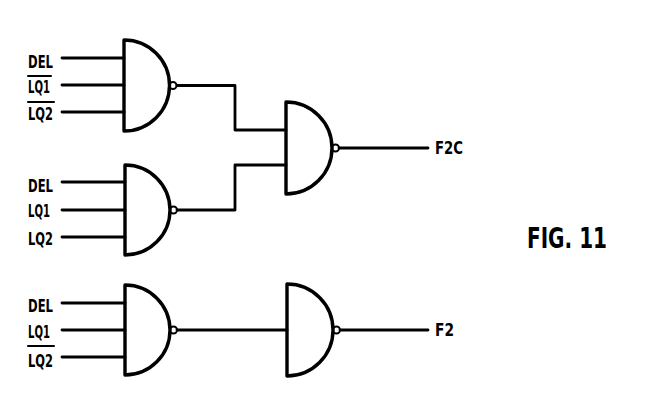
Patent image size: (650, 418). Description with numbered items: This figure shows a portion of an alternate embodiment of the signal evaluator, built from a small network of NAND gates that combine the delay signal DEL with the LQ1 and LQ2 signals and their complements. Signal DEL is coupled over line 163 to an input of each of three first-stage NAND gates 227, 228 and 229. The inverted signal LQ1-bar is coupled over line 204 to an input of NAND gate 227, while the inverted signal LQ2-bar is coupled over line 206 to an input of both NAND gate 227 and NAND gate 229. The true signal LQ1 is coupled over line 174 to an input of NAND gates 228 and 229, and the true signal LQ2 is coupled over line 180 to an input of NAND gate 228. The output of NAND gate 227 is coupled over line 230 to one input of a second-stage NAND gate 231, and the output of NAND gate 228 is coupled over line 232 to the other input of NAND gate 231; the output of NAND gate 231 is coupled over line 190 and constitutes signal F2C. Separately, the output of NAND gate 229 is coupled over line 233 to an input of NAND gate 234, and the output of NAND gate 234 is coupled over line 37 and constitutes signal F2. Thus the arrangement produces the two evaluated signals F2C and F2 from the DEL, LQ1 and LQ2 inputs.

The line 163 is at (107, 52).
The line 204 is at (110, 83).
The line 206 is at (110, 110).
The line 174 is at (105, 207).
The line 180 is at (106, 234).
The NAND gate 227 is at (149, 130).
The NAND gate 228 is at (150, 254).
The NAND gate 229 is at (150, 374).
The line 230 is at (213, 84).
The NAND gate 231 is at (306, 103).
The line 232 is at (213, 211).
The line 233 is at (213, 331).
The NAND gate 234 is at (307, 285).
The line 190 is at (355, 147).
The line 37 is at (355, 329).